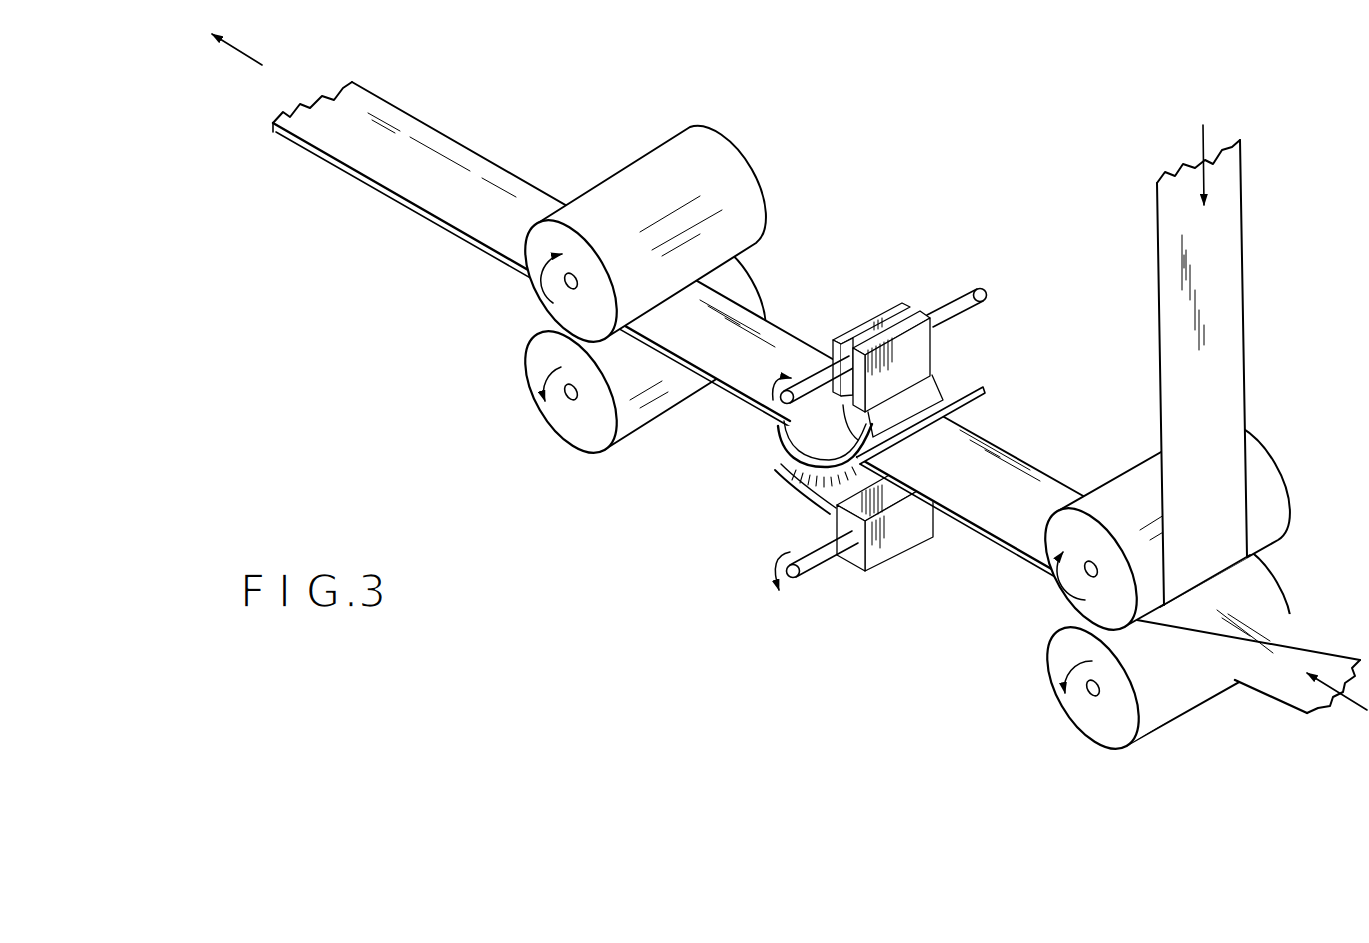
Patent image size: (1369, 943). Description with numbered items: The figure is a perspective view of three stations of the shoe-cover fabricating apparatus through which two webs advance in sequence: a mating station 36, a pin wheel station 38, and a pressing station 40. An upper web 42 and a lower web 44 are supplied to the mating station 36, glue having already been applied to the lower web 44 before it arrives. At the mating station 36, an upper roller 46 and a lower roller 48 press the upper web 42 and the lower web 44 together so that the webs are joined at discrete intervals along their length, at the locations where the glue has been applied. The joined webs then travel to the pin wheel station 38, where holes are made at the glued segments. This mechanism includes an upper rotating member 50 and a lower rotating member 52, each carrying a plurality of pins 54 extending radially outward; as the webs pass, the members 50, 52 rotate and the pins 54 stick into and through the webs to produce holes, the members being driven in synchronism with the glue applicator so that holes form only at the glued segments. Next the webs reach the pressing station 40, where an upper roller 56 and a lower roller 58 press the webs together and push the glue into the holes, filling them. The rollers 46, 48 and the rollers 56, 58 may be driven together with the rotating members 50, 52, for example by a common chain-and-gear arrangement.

The mating station 36 is at (1112, 444).
The pin wheel station 38 is at (885, 440).
The pressing station 40 is at (554, 275).
The upper web 42 is at (1241, 173).
The lower web 44 is at (1288, 688).
The upper roller 46 is at (1076, 597).
The lower roller 48 is at (1058, 646).
The upper rotating member 50 is at (986, 390).
The lower rotating member 52 is at (778, 468).
The pins 54 is at (796, 489).
The upper roller 56 is at (737, 171).
The lower roller 58 is at (534, 344).